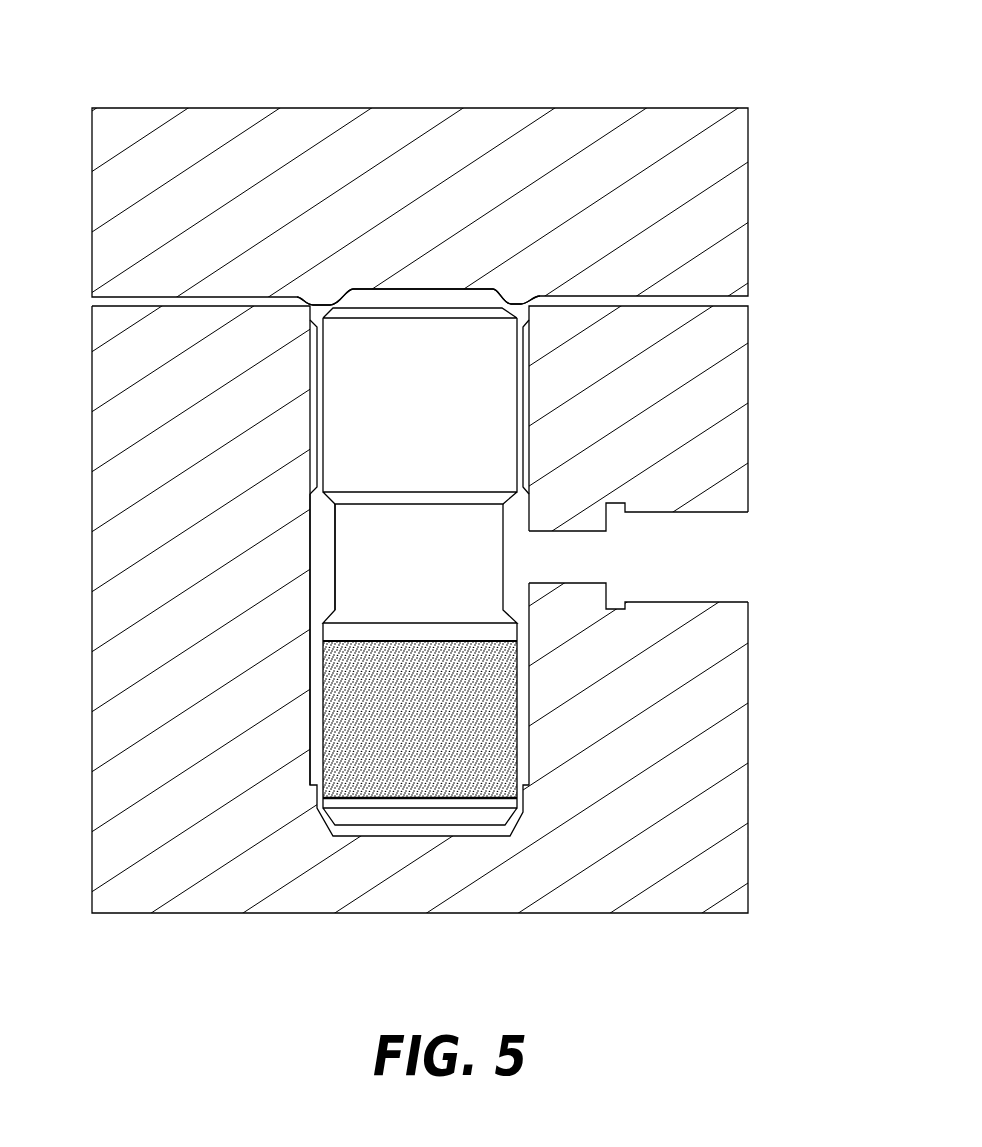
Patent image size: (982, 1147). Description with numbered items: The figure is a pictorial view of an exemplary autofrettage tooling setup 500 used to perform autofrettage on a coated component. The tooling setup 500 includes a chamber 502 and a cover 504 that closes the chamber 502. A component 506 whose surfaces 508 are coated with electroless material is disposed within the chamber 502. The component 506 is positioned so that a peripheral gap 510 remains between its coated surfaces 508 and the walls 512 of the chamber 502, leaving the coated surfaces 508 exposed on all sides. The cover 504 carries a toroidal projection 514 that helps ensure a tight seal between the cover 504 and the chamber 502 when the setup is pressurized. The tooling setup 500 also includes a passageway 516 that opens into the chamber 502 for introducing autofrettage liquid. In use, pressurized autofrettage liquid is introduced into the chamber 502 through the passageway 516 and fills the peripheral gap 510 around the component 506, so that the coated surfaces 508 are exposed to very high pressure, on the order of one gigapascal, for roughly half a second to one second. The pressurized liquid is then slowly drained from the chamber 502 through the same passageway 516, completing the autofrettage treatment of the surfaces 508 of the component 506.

The autofrettage tooling setup 500 is at (566, 54).
The chamber 502 is at (727, 440).
The cover 504 is at (718, 198).
The component 506 is at (480, 423).
The surfaces 508 is at (318, 738).
The peripheral gap 510 is at (325, 578).
The walls 512 is at (312, 548).
The toroidal projection 514 is at (517, 300).
The passageway 516 is at (713, 562).